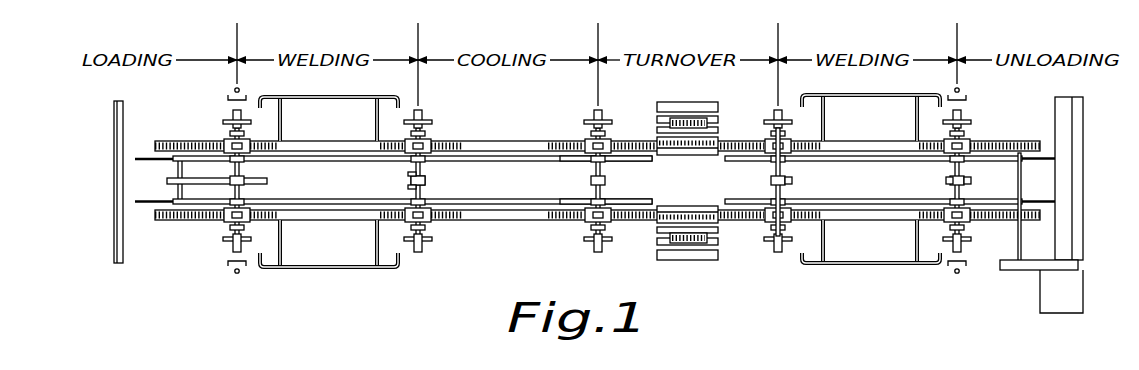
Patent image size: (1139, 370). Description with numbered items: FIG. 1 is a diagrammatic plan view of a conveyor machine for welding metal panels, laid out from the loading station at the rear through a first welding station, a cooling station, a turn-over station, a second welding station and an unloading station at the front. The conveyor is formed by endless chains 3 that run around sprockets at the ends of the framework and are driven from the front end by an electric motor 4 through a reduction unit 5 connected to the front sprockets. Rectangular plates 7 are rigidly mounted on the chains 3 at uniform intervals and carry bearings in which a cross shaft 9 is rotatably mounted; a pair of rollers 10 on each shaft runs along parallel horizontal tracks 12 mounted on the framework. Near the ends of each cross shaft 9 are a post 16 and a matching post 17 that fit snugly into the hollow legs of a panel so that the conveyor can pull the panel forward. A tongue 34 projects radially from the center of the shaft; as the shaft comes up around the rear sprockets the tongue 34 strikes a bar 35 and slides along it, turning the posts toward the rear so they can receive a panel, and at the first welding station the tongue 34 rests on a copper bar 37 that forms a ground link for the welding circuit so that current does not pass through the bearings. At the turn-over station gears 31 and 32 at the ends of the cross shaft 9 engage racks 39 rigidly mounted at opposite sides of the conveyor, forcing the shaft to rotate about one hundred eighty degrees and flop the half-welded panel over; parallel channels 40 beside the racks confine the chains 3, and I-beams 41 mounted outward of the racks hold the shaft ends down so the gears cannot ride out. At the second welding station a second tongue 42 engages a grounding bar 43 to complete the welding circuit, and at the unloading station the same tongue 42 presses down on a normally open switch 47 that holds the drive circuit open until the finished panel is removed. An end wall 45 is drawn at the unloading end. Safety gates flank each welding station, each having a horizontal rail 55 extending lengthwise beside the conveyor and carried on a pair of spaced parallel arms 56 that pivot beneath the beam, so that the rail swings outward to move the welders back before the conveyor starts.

The endless chains 3 is at (502, 141).
The electric motor 4 is at (1062, 292).
The reduction unit 5 is at (1022, 272).
The rectangular plates 7 is at (607, 137).
The cross shaft 9 is at (424, 186).
The rollers 10 is at (586, 199).
The horizontal tracks 12 is at (285, 162).
The post 16 is at (232, 236).
The post 17 is at (230, 132).
The gear 31 is at (772, 122).
The gear 32 is at (770, 240).
The tongue 34 is at (406, 176).
The bar 35 is at (166, 181).
The copper bar 37 is at (408, 187).
The racks 39 is at (707, 122).
The parallel channels 40 is at (675, 206).
The I-beams 41 is at (676, 102).
The second tongue 42 is at (791, 180).
The grounding bar 43 is at (770, 181).
The end wall 45 is at (1058, 125).
The normally open switch 47 is at (948, 180).
The horizontal rail 55 is at (326, 99).
The parallel arms 56 is at (375, 233).